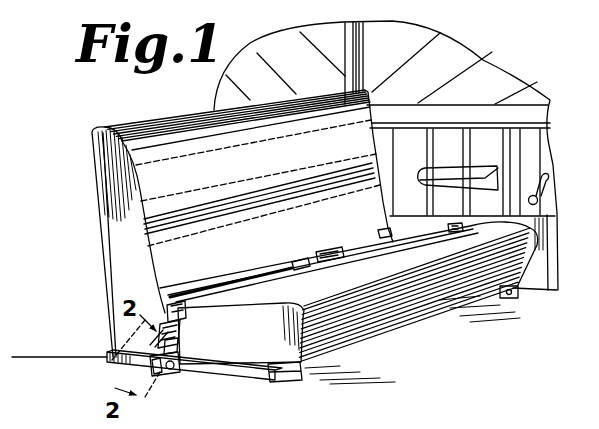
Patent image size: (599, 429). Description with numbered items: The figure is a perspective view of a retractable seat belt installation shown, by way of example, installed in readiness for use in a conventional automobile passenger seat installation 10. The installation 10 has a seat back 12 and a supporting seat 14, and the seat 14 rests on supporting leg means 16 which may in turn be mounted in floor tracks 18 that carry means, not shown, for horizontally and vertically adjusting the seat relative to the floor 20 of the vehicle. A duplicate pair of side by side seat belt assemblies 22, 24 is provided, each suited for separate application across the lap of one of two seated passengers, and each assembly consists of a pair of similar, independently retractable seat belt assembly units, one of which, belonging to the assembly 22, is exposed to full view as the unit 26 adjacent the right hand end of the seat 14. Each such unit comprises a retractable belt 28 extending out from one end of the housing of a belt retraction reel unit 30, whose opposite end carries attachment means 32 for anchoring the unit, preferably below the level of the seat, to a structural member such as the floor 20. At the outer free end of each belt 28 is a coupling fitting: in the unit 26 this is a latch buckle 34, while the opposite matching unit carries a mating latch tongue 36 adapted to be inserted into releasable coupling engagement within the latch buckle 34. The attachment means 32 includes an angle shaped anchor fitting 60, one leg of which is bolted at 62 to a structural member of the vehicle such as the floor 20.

The automobile passenger seat installation 10 is at (281, 251).
The seat back 12 is at (97, 191).
The supporting seat 14 is at (358, 270).
The supporting leg means 16 is at (113, 356).
The floor tracks 18 is at (300, 380).
The floor 20 is at (84, 359).
The seat belt assembly 22 is at (258, 266).
The seat belt assembly 24 is at (380, 233).
The seat belt assembly unit 26 is at (147, 341).
The retractable belt 28 is at (322, 250).
The belt retraction reel unit 30 is at (180, 349).
The attachment means 32 is at (158, 370).
The latch buckle 34 is at (188, 316).
The latch tongue 36 is at (300, 268).
The anchor fitting 60 is at (155, 375).
The bolt 62 is at (178, 372).